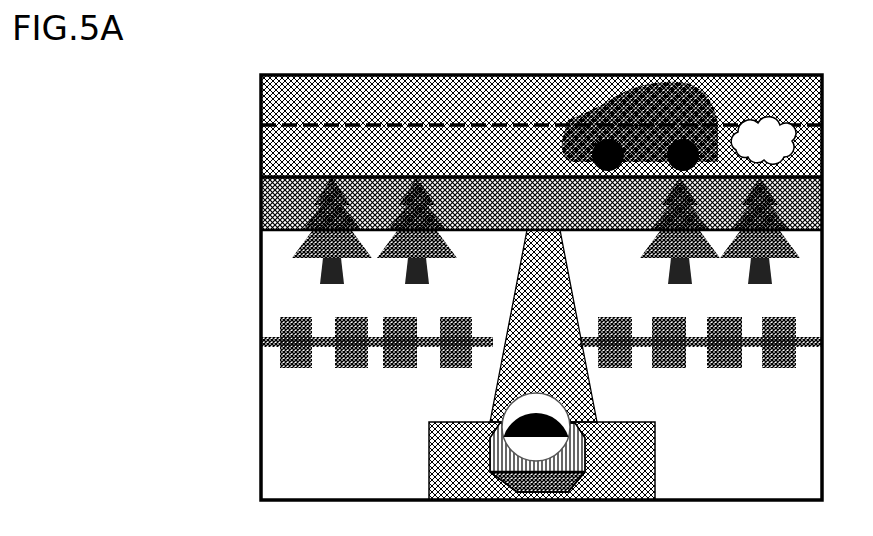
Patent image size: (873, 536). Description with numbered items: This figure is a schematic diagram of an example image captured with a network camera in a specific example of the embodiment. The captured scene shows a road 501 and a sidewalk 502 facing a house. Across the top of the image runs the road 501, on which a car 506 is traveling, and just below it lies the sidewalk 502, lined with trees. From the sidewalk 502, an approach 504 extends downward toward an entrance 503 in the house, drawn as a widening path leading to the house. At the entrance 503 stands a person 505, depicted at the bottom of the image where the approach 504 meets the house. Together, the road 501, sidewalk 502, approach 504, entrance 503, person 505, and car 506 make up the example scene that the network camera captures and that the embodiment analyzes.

The road 501 is at (307, 119).
The sidewalk 502 is at (290, 220).
The entrance 503 is at (612, 465).
The approach 504 is at (535, 308).
The person 505 is at (490, 470).
The car 506 is at (585, 118).